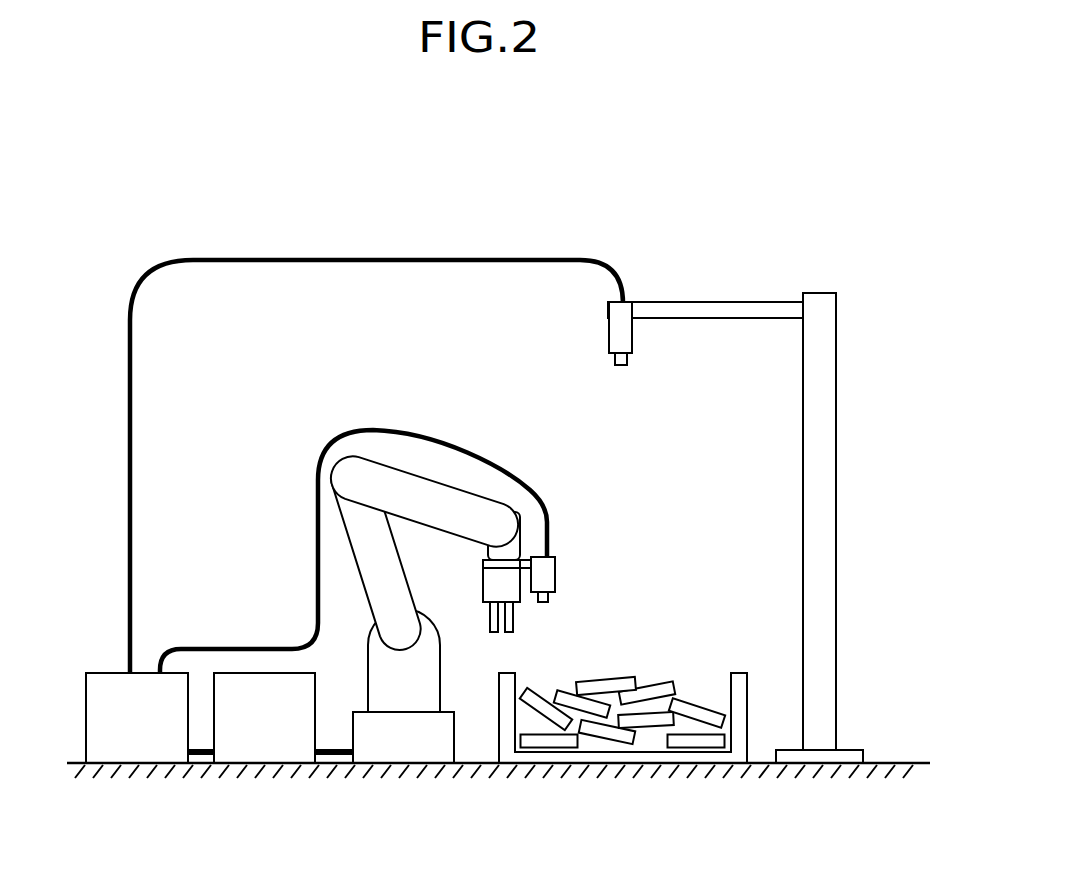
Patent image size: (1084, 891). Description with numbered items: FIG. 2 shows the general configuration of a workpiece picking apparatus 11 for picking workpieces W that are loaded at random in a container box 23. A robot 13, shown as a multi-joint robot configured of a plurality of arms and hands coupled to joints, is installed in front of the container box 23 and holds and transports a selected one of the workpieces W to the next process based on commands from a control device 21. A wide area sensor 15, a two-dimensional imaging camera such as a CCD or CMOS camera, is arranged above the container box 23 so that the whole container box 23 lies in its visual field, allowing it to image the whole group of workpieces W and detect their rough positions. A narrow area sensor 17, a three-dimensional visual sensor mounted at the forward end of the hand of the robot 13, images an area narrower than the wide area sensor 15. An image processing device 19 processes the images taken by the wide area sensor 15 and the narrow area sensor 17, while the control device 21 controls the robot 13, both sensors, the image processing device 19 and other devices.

The workpiece picking apparatus 11 is at (551, 205).
The robot 13 is at (415, 498).
The wide area sensor 15 is at (632, 338).
The narrow area sensor 17 is at (556, 570).
The image processing device 19 is at (108, 680).
The control device 21 is at (303, 678).
The container box 23 is at (742, 703).
The workpiece W is at (678, 682).